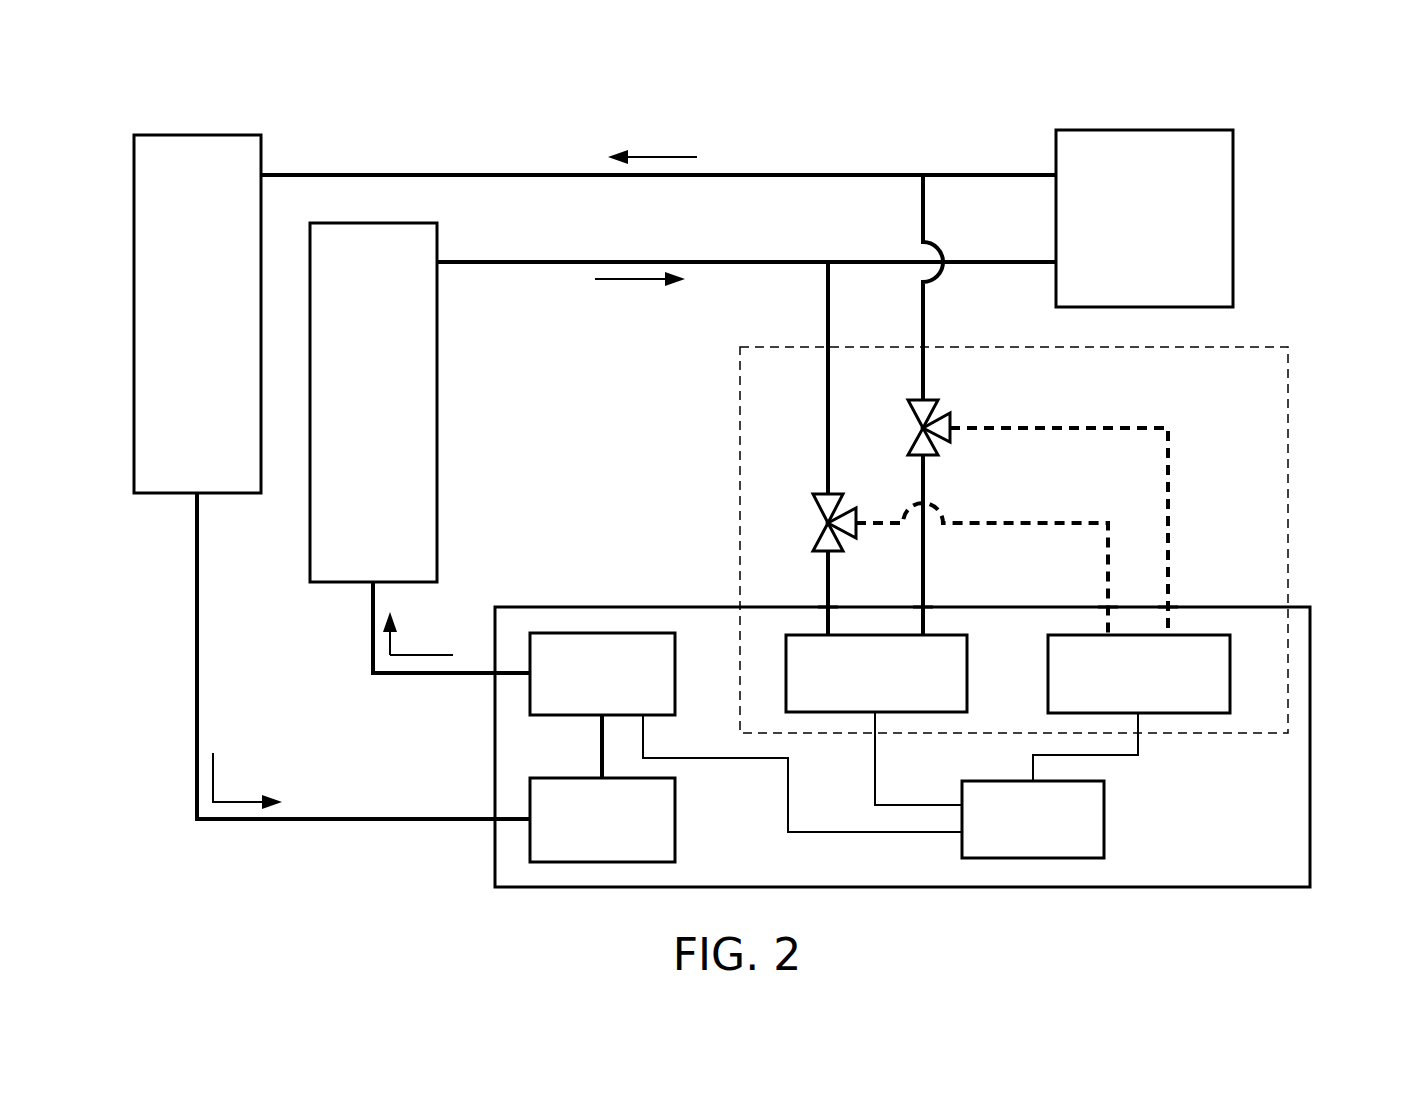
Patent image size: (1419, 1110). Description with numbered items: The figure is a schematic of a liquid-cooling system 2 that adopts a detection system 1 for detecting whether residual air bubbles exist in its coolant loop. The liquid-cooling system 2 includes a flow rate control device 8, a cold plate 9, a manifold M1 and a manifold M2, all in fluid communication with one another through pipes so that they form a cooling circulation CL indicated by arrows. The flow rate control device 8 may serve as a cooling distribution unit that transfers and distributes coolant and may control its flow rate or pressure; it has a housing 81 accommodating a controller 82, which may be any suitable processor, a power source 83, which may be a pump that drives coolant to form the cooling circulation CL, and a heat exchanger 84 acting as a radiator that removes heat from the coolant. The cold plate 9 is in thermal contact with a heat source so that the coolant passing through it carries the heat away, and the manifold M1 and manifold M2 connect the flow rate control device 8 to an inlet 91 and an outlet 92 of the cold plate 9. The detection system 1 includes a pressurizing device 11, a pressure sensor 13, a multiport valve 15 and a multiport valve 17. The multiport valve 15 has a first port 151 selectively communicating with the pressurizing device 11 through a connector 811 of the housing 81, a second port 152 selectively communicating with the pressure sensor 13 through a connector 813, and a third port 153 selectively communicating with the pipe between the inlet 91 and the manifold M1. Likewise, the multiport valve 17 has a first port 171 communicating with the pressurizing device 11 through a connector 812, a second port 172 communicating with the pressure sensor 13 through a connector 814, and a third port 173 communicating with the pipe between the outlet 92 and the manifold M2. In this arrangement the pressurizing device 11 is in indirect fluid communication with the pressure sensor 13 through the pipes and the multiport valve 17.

The detection system 1 is at (1290, 443).
The liquid-cooling system 2 is at (405, 130).
The flow rate control device 8 is at (1343, 845).
The cold plate 9 is at (1236, 218).
The pressurizing device 11 is at (967, 673).
The pressure sensor 13 is at (1230, 672).
The multiport valve 15 is at (824, 523).
The multiport valve 17 is at (918, 424).
The housing 81 is at (1310, 748).
The controller 82 is at (1104, 820).
The power source 83 is at (675, 673).
The heat exchanger 84 is at (675, 820).
The inlet 91 is at (1056, 265).
The outlet 92 is at (1056, 175).
The first port 151 is at (831, 553).
The second port 152 is at (858, 520).
The third port 153 is at (826, 496).
The first port 171 is at (927, 455).
The second port 172 is at (952, 425).
The third port 173 is at (918, 402).
The connector 811 is at (826, 605).
The connector 812 is at (926, 605).
The connector 813 is at (1106, 605).
The connector 814 is at (1170, 605).
The cooling circulation CL is at (662, 155).
The manifold M1 is at (310, 533).
The manifold M2 is at (134, 313).